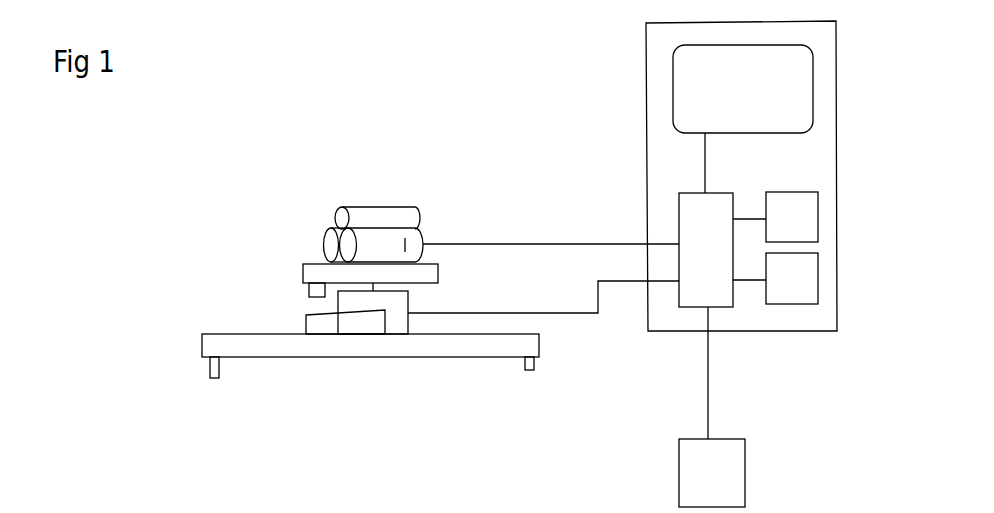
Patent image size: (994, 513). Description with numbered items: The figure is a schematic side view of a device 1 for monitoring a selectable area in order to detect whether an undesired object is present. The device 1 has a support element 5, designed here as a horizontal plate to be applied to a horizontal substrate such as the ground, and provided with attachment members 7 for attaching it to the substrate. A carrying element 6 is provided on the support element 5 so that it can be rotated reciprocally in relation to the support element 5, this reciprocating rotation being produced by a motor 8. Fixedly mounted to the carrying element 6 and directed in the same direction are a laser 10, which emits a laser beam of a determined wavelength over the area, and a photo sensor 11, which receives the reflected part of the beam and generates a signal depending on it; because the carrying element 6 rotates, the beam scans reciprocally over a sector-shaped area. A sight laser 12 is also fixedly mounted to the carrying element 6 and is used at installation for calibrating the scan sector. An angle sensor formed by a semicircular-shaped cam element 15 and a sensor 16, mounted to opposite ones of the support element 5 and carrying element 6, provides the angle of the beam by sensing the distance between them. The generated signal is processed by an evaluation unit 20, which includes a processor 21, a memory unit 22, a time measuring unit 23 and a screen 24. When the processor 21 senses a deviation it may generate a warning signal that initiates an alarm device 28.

The device 1 is at (256, 166).
The support element 5 is at (258, 348).
The carrying element 6 is at (323, 273).
The attachment members 7 is at (212, 372).
The motor 8 is at (397, 320).
The laser 10 is at (417, 242).
The photo sensor 11 is at (330, 243).
The sight laser 12 is at (365, 217).
The cam element 15 is at (338, 323).
The sensor 16 is at (310, 292).
The evaluation unit 20 is at (653, 143).
The processor 21 is at (753, 178).
The memory unit 22 is at (787, 266).
The time measuring unit 23 is at (800, 208).
The screen 24 is at (780, 84).
The alarm device 28 is at (699, 474).